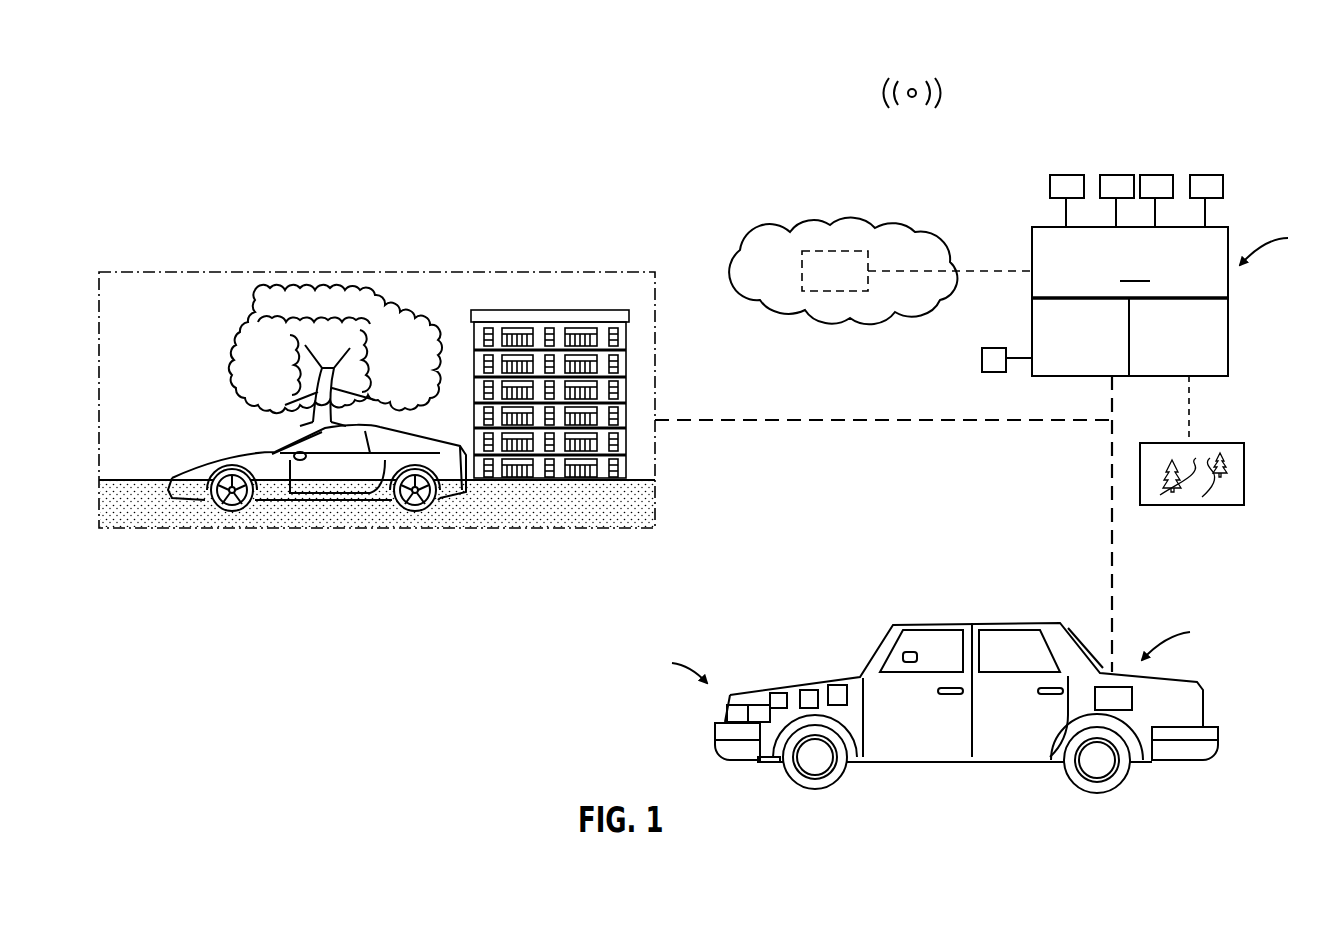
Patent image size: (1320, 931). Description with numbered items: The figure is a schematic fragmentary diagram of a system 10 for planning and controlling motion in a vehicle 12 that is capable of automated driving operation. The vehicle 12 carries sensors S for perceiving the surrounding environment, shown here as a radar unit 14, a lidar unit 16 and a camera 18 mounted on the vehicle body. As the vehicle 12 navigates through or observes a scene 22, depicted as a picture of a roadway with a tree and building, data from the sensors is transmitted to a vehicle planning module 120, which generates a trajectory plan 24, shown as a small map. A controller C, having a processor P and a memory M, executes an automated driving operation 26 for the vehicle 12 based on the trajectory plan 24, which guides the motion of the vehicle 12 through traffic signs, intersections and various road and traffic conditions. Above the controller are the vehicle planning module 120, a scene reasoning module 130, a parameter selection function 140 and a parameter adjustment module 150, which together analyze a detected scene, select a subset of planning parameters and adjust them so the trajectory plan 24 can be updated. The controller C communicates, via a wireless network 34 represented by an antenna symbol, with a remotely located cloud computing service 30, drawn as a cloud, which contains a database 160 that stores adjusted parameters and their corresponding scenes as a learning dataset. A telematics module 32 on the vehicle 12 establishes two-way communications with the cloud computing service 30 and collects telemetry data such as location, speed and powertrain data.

The system 10 is at (720, 92).
The vehicle 12 is at (930, 668).
The radar unit 14 is at (838, 685).
The lidar unit 16 is at (808, 690).
The camera 18 is at (777, 693).
The scene 22 is at (358, 570).
The trajectory plan 24 is at (1205, 443).
The automated driving operation 26 is at (1165, 299).
The cloud computing service 30 is at (793, 207).
The telematics module 32 is at (988, 348).
The wireless network 34 is at (940, 68).
The vehicle planning module 120 is at (1078, 153).
The scene reasoning module 130 is at (1107, 175).
The parameter selection function 140 is at (1157, 175).
The parameter adjustment module 150 is at (1207, 175).
The database 160 is at (838, 250).